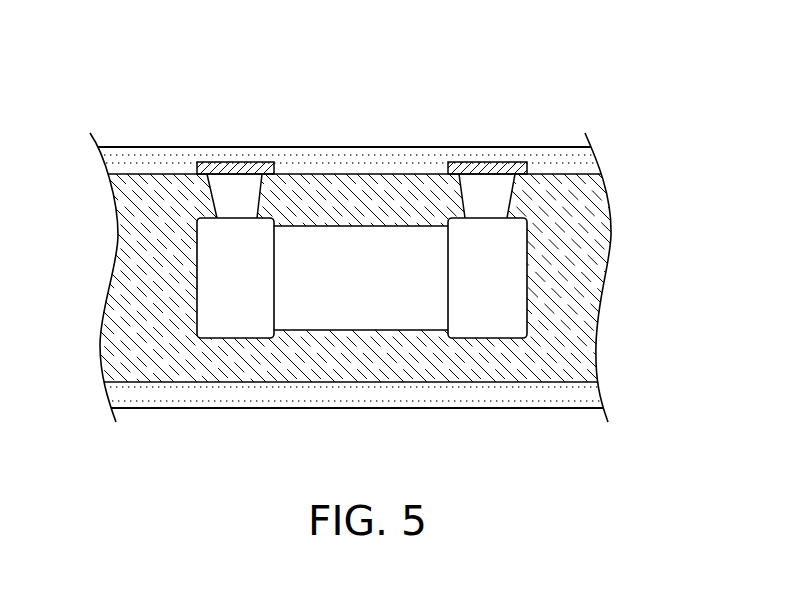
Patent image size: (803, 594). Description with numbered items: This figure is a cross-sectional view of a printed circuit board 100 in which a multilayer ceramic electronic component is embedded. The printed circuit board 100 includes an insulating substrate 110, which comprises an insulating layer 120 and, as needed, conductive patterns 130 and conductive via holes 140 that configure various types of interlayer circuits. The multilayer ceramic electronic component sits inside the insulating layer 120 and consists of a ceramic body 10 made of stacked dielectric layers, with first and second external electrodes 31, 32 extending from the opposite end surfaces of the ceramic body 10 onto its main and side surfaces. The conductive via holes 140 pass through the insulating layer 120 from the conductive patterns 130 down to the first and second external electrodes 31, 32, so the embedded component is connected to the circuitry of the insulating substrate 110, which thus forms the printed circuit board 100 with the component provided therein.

The printed circuit board 100 is at (385, 53).
The insulating substrate 110 is at (573, 162).
The insulating layer 120 is at (573, 228).
The conductive patterns 130 is at (239, 172).
The conductive via holes 140 is at (253, 198).
The first external electrode 31 is at (210, 287).
The second external electrode 32 is at (505, 285).
The ceramic body 10 is at (350, 310).